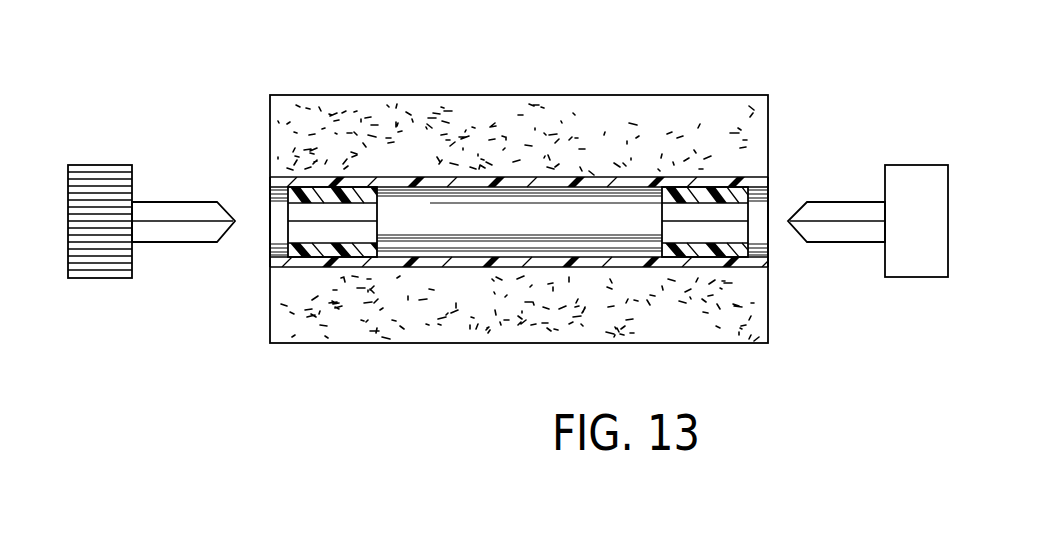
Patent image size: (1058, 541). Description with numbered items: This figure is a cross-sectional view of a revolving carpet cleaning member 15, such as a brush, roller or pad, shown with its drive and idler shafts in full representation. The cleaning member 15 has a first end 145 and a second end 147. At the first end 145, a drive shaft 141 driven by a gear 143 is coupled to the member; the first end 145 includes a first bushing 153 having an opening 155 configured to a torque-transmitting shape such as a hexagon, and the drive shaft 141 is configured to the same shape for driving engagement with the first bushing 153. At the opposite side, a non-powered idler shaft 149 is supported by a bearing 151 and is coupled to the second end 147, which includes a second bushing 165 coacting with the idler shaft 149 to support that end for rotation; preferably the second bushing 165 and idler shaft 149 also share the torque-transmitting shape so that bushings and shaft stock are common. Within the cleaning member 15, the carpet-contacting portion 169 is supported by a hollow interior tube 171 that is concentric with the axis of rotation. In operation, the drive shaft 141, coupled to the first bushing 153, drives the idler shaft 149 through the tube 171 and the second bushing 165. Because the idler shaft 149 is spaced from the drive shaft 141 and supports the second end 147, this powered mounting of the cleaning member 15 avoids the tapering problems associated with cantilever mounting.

The carpet cleaning member 15 is at (430, 95).
The drive shaft 141 is at (180, 242).
The gear 143 is at (82, 165).
The first end 145 is at (270, 95).
The second end 147 is at (768, 95).
The idler shaft 149 is at (835, 242).
The bearing 151 is at (905, 165).
The first bushing 153 is at (308, 180).
The opening 155 is at (303, 218).
The second bushing 165 is at (710, 188).
The carpet-contacting portion 169 is at (525, 112).
The hollow interior tube 171 is at (432, 257).